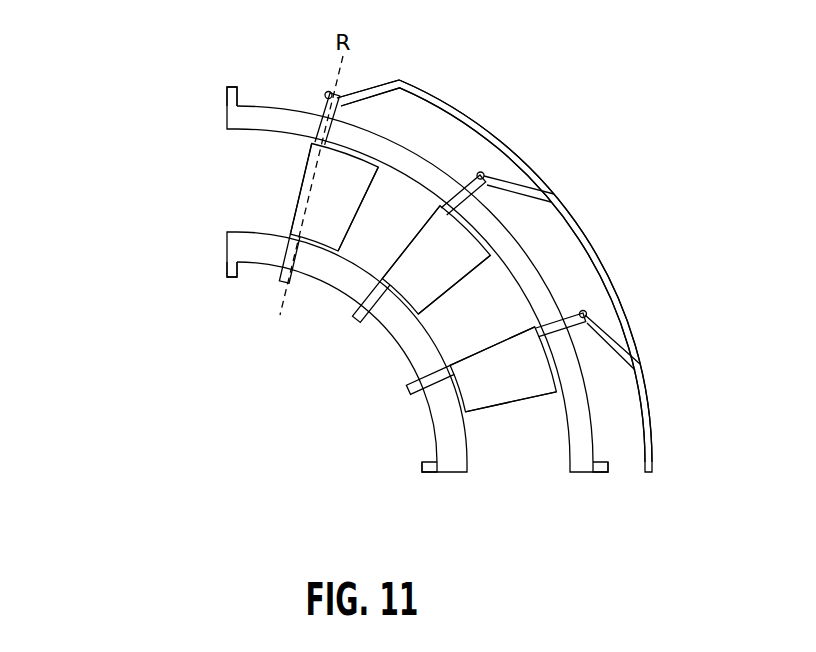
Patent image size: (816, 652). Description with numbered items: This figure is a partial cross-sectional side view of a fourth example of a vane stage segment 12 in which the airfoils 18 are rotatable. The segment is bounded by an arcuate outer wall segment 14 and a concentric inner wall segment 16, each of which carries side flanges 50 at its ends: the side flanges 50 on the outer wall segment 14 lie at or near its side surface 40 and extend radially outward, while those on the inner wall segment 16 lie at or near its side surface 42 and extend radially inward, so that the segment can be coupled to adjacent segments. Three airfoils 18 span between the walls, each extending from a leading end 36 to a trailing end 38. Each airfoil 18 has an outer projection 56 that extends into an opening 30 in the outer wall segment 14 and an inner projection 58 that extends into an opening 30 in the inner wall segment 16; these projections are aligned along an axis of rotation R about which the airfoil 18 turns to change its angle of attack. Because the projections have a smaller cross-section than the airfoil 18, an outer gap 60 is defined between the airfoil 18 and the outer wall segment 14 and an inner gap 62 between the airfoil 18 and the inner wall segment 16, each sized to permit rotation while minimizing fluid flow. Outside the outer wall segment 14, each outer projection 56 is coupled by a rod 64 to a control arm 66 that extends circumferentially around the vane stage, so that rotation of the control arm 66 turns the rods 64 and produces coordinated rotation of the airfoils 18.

The vane stage segment 12 is at (120, 226).
The outer wall segment 14 is at (260, 121).
The inner wall segment 16 is at (253, 235).
The airfoil 18 is at (320, 215).
The opening 30 is at (352, 119).
The leading end 36 is at (297, 190).
The trailing end 38 is at (357, 215).
The side surface 40 is at (227, 115).
The side surface 42 is at (226, 244).
The side flange 50 is at (232, 86).
The outer projection 56 is at (323, 112).
The inner projection 58 is at (281, 283).
The outer gap 60 is at (382, 149).
The inner gap 62 is at (324, 272).
The rod 64 is at (370, 87).
The control arm 66 is at (594, 253).